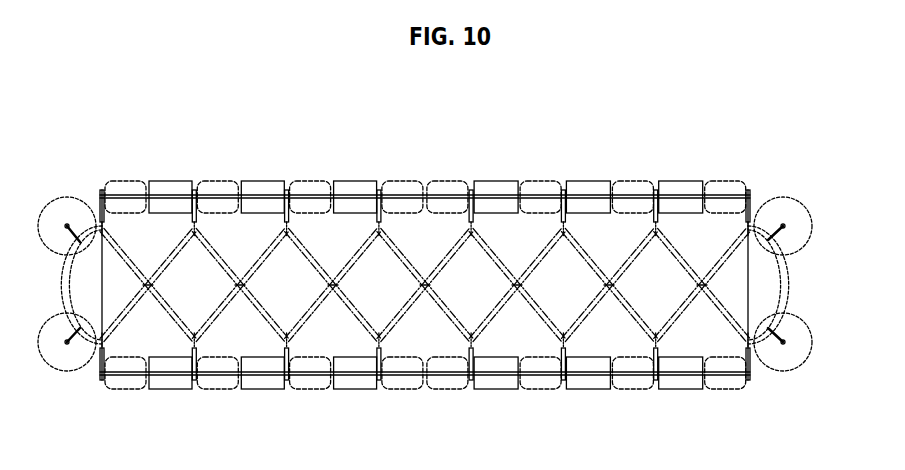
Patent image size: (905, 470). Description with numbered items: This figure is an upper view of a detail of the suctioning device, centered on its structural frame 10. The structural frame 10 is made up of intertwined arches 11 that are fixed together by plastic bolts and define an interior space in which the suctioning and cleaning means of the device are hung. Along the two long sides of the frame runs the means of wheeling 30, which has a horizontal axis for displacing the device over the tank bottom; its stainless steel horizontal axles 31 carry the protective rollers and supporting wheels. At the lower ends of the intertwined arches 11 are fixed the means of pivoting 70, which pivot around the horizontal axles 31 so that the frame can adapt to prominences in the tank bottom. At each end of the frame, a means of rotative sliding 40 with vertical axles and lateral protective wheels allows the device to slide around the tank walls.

The structural frame 10 is at (425, 249).
The intertwined arches 11 is at (215, 242).
The means of wheeling 30 is at (425, 252).
The horizontal axles 31 is at (357, 171).
The means of rotative sliding 40 is at (66, 328).
The means of pivoting 70 is at (655, 192).